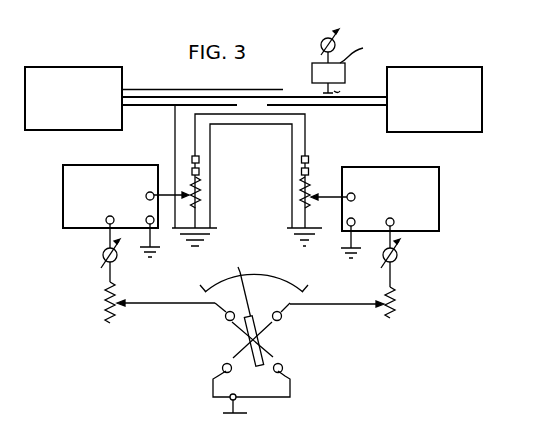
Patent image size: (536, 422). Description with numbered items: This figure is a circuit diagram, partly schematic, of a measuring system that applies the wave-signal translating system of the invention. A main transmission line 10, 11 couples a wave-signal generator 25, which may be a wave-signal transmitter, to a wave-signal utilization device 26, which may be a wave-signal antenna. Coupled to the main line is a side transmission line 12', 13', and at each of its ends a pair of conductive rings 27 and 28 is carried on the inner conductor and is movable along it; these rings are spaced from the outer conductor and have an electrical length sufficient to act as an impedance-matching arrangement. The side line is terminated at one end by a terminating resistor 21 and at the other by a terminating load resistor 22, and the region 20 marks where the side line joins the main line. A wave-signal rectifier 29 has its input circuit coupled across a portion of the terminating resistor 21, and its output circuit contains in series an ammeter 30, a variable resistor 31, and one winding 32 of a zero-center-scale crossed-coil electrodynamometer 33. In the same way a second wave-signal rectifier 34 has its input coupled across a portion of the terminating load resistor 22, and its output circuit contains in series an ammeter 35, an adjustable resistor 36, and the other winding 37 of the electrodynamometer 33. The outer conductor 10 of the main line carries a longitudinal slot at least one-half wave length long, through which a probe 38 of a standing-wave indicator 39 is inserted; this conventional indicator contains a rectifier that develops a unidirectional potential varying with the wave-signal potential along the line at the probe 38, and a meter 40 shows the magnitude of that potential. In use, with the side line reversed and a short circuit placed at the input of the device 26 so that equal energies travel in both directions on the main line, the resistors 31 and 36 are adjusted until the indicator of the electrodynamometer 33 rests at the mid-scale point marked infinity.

The outer conductor of main transmission line 10 is at (167, 89).
The main transmission line conductor 11 is at (144, 97).
The side transmission line conductor 12' is at (251, 176).
The side transmission line conductor 13' is at (235, 175).
The intermediate point of transmission line 20 is at (254, 106).
The terminating resistor 21 is at (200, 180).
The terminating load resistor 22 is at (300, 185).
The wave-signal generator 25 is at (103, 67).
The wave-signal utilization device 26 is at (460, 132).
The conductive ring 27 is at (200, 158).
The conductive ring 28 is at (301, 172).
The wave-signal rectifier 29 is at (87, 165).
The ammeter 30 is at (103, 255).
The variable resistor 31 is at (106, 303).
The winding 32 is at (224, 319).
The zero-center-scale crossed-coil electrodynamometer 33 is at (253, 341).
The wave-signal rectifier 34 is at (370, 167).
The ammeter 35 is at (397, 255).
The adjustable resistor 36 is at (396, 304).
The winding 37 is at (284, 316).
The probe 38 is at (336, 91).
The standing-wave indicator 39 is at (312, 72).
The meter 40 is at (321, 45).